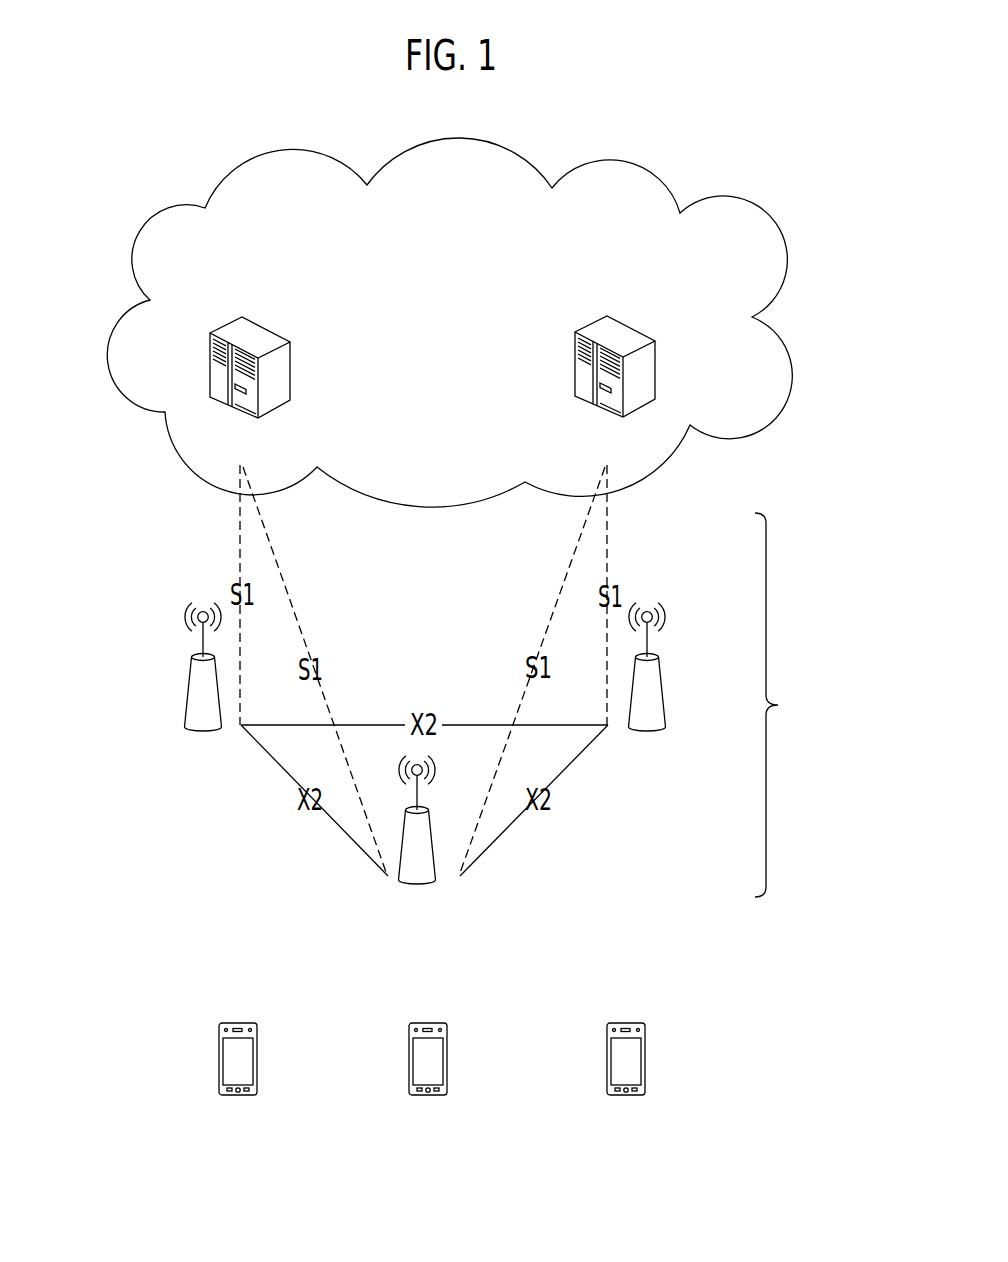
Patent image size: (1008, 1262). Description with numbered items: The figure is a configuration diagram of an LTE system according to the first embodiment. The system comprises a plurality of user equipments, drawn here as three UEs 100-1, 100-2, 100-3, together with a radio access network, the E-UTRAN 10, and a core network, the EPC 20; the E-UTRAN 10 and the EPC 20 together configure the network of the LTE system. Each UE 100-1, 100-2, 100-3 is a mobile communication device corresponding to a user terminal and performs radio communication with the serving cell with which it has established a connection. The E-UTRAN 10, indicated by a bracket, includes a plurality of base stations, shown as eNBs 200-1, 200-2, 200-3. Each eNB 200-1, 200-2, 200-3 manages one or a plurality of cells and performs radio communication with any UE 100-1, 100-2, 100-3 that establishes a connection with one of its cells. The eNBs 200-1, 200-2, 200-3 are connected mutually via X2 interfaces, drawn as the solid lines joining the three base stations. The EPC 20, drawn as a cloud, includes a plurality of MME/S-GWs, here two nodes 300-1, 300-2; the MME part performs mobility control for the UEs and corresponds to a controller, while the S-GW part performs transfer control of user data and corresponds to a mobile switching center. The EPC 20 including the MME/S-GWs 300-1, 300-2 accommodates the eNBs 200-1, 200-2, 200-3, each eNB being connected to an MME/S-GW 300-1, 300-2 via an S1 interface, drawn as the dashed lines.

The E-UTRAN 10 is at (821, 705).
The EPC 20 is at (655, 176).
The UE 100-1 is at (250, 1023).
The UE 100-2 is at (431, 1023).
The UE 100-3 is at (638, 1023).
The eNB 200-1 is at (188, 693).
The eNB 200-2 is at (433, 857).
The eNB 200-3 is at (660, 671).
The MME/S-GW 300-1 is at (272, 331).
The MME/S-GW 300-2 is at (626, 331).